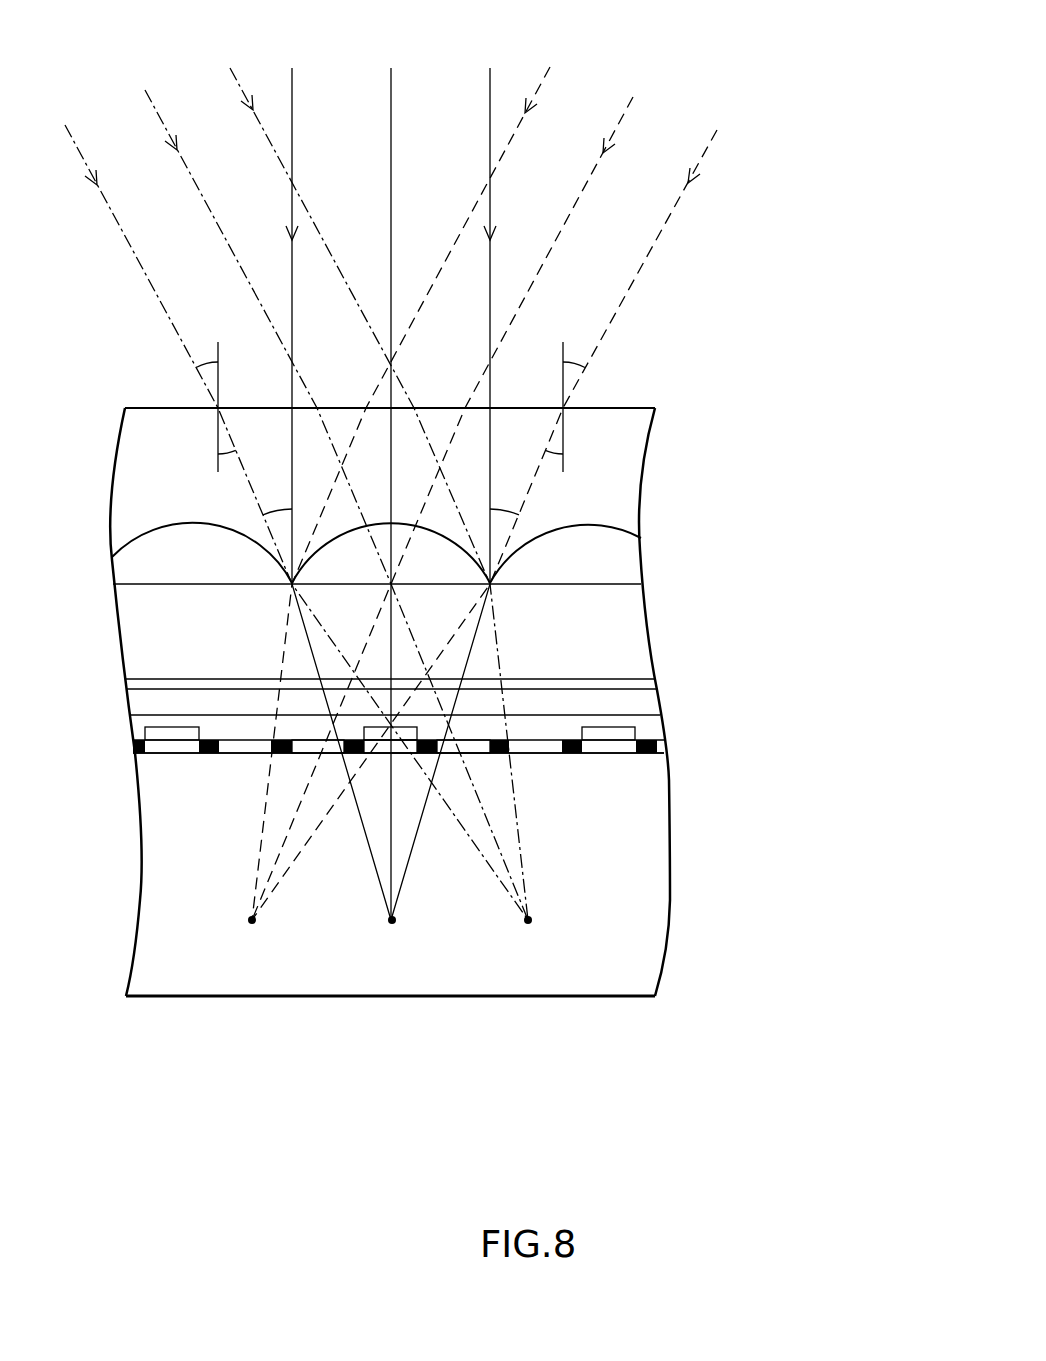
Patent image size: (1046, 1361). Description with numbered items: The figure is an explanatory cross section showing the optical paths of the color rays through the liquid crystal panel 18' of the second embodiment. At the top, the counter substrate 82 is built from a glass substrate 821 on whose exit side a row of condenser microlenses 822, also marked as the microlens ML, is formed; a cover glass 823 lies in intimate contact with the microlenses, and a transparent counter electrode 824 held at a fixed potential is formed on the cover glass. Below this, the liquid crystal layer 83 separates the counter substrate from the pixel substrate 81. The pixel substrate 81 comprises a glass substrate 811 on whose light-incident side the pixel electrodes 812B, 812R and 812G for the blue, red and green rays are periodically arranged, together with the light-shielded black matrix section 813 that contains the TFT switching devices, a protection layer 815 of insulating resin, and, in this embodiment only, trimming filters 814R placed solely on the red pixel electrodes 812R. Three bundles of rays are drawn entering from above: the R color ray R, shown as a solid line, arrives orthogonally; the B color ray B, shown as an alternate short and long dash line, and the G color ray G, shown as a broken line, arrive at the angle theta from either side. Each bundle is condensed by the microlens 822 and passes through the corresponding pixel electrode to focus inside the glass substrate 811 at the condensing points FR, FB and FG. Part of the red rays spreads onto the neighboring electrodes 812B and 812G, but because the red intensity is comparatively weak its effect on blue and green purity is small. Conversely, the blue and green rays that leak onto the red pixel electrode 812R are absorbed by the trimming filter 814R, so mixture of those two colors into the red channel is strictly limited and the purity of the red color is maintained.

The liquid crystal panel 18' is at (493, 590).
The counter substrate 82 is at (484, 576).
The glass substrate 821 is at (617, 423).
The microlens 822 is at (444, 516).
The cover glass 823 is at (620, 605).
The counter electrode 824 is at (448, 647).
The liquid crystal layer 83 is at (175, 697).
The pixel substrate 81 is at (492, 937).
The glass substrate 811 is at (437, 930).
The pixel electrode 812B is at (478, 753).
The pixel electrode 812R is at (398, 748).
The pixel electrode 812G is at (312, 747).
The black matrix section 813 is at (281, 753).
The trimming filter 814R is at (172, 732).
The protection layer 815 is at (572, 753).
The B color ray B is at (240, 64).
The R color ray R is at (510, 63).
The G color ray G is at (727, 134).
The microlens ML is at (403, 522).
The condensing point FG is at (252, 922).
The condensing point FR is at (392, 922).
The condensing point FB is at (528, 920).